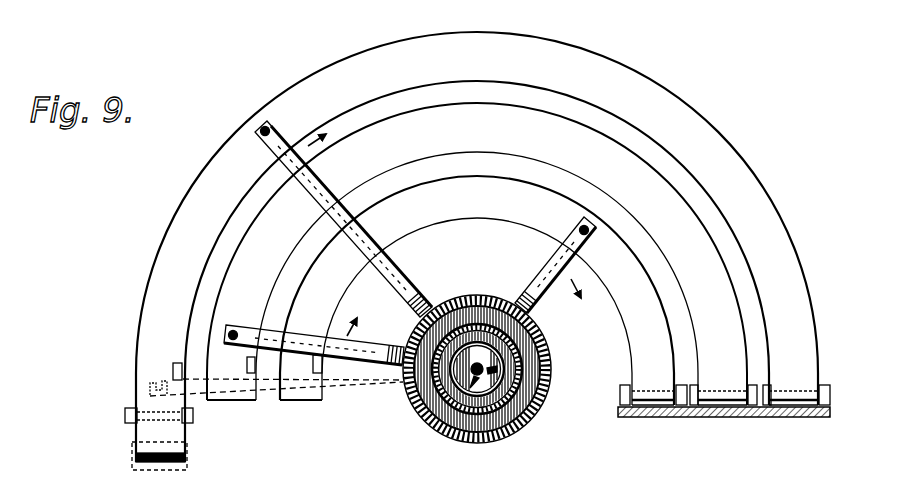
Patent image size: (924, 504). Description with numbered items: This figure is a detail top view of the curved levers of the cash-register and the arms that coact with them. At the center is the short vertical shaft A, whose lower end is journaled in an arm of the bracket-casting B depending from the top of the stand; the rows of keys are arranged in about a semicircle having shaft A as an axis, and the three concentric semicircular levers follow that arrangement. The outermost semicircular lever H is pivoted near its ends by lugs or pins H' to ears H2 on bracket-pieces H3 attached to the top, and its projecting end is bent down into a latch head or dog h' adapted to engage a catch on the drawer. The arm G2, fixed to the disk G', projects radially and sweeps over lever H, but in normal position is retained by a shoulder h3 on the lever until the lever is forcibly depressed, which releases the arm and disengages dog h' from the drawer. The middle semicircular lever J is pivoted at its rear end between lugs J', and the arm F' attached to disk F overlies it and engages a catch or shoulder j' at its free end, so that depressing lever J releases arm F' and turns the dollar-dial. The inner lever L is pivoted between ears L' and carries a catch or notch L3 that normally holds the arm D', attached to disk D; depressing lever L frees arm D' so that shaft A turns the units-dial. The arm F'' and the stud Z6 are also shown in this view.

The semicircular lever H is at (477, 247).
The semicircular lever J is at (477, 254).
The lever L is at (477, 290).
The lugs or pins H' is at (478, 401).
The ears H2 is at (765, 410).
The bracket-pieces H3 is at (680, 417).
The latch head or dog h' is at (136, 425).
The shoulder h3 is at (173, 368).
The lugs J' is at (719, 405).
The catch or shoulder j' is at (234, 366).
The ears L' is at (643, 386).
The catch or notch L3 is at (313, 364).
The disk G' is at (472, 373).
The arm G2 is at (400, 272).
The arm F' is at (503, 375).
The radial arm F'' is at (314, 369).
The arm D' is at (549, 265).
The pivot stud of arm Z6 is at (273, 126).
The short vertical shaft A is at (474, 379).
The bracket-casting B is at (492, 364).